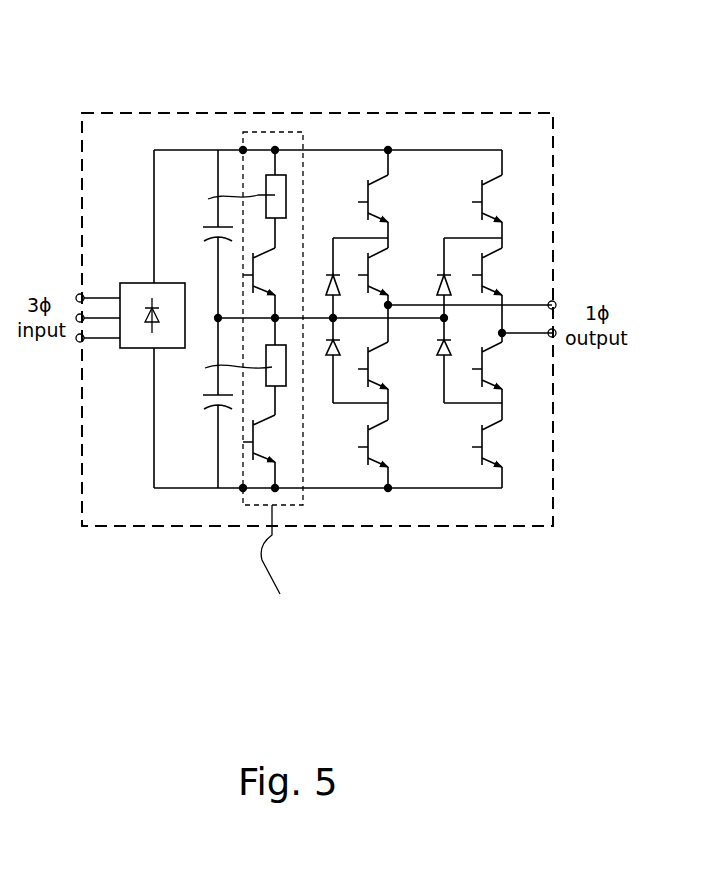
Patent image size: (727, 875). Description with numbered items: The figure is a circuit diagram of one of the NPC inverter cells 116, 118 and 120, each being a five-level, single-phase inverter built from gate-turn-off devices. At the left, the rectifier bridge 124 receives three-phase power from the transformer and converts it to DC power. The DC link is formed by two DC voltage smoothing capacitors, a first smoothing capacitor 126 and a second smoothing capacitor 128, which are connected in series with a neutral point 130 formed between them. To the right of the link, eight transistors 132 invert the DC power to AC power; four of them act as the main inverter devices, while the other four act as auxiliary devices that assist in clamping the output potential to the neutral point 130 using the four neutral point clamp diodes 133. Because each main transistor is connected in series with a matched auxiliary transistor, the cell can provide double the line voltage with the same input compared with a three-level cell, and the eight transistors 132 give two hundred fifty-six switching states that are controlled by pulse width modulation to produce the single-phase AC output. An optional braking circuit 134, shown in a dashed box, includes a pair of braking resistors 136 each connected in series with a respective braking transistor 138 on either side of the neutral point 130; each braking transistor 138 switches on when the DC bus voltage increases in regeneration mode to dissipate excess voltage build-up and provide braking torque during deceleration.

The NPC inverter cell 116 is at (446, 98).
The NPC inverter cell 118 is at (317, 319).
The NPC inverter cell 120 is at (317, 319).
The rectifier bridge 124 is at (150, 307).
The DC voltage smoothing capacitor C1A 126 is at (232, 237).
The DC voltage smoothing capacitor C1B 128 is at (230, 405).
The neutral point 130 is at (218, 317).
The transistors GTR1A through GTR4B 132 is at (400, 240).
The neutral point clamp diodes D1 through D4 133 is at (332, 345).
The braking circuit 134 is at (287, 144).
The braking resistor DBR1A, DBR1B 136 is at (275, 190).
The braking transistor GTR5A, GTR5B 138 is at (292, 250).